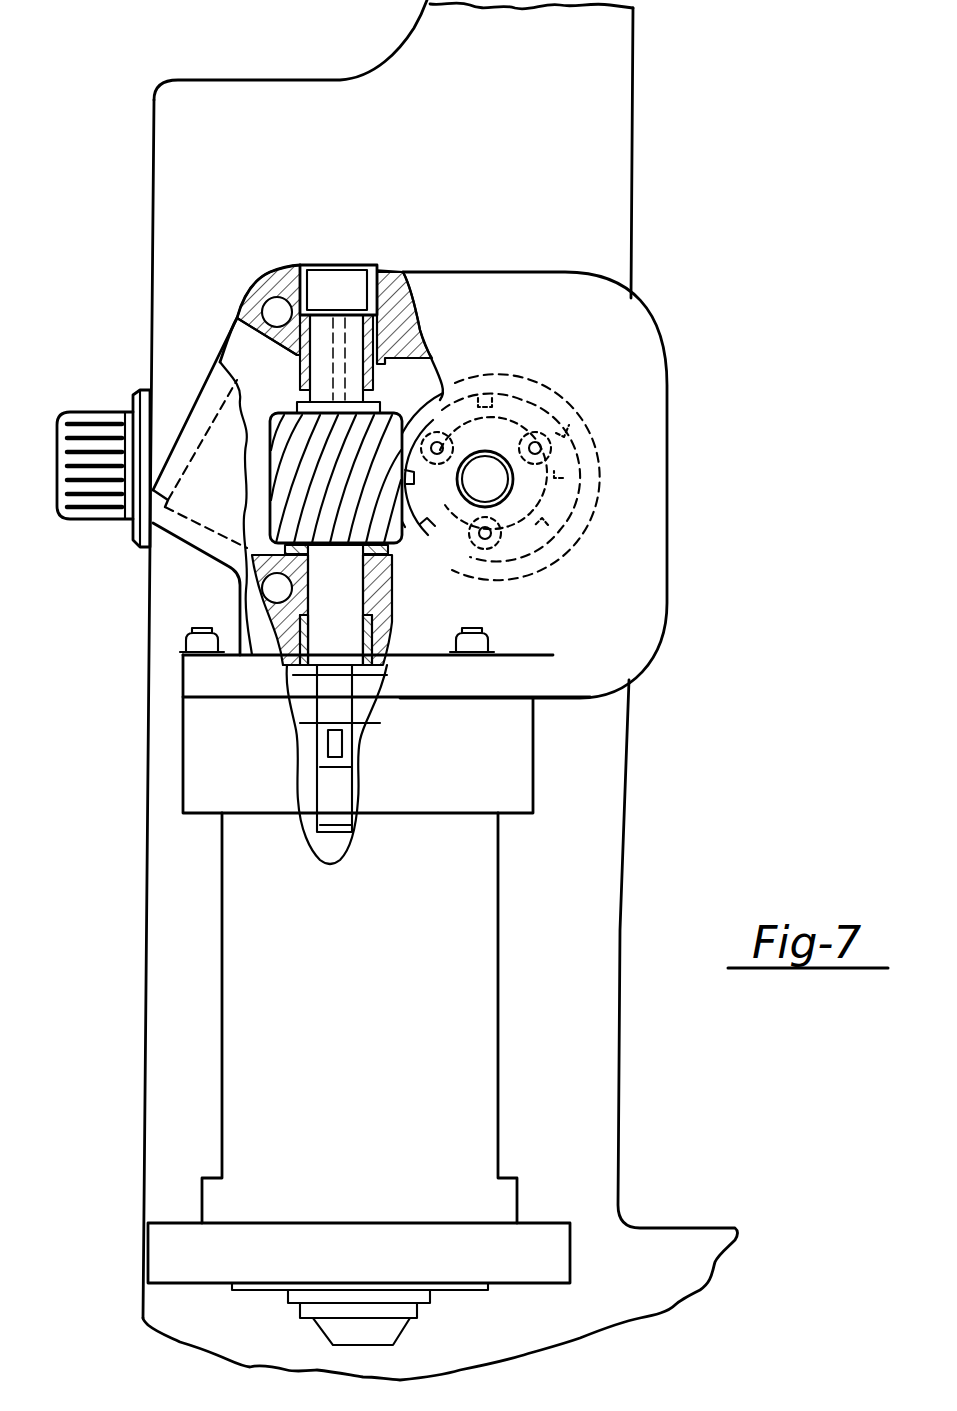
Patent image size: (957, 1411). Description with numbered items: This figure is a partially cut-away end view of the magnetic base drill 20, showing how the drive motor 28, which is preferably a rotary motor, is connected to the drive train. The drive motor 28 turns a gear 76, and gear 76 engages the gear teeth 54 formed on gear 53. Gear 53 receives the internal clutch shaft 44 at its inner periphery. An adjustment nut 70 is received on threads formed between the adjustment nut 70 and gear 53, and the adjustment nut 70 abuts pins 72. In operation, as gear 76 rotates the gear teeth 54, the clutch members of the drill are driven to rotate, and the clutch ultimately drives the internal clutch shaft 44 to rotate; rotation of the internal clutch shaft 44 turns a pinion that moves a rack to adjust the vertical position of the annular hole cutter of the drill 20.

The magnetic base drill 20 is at (692, 792).
The drive motor 28 is at (248, 1000).
The internal clutch shaft 44 is at (488, 482).
The gear 53 is at (578, 475).
The gear teeth 54 is at (443, 375).
The adjustment nut 70 is at (512, 540).
The pins 72 is at (482, 540).
The gear 76 is at (280, 500).